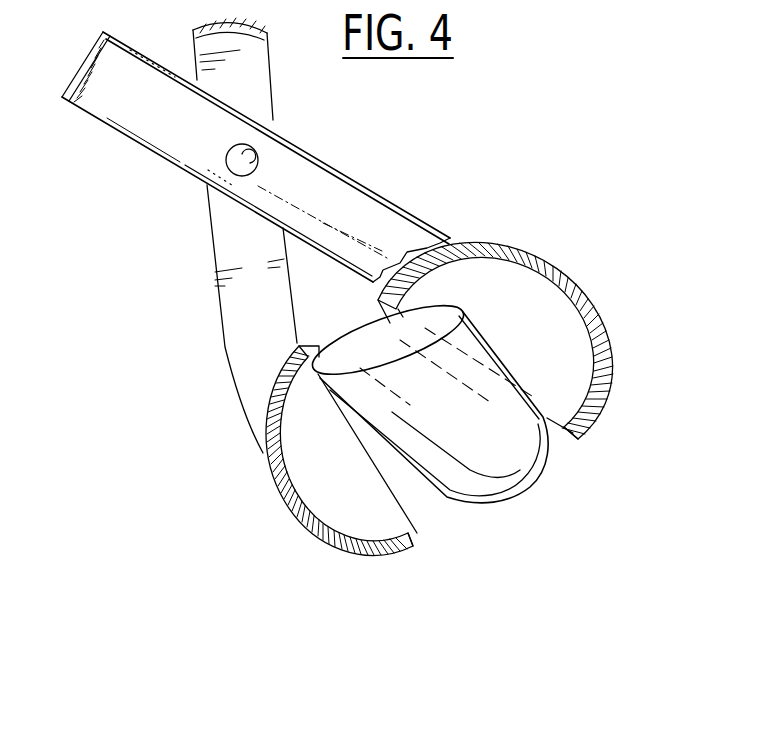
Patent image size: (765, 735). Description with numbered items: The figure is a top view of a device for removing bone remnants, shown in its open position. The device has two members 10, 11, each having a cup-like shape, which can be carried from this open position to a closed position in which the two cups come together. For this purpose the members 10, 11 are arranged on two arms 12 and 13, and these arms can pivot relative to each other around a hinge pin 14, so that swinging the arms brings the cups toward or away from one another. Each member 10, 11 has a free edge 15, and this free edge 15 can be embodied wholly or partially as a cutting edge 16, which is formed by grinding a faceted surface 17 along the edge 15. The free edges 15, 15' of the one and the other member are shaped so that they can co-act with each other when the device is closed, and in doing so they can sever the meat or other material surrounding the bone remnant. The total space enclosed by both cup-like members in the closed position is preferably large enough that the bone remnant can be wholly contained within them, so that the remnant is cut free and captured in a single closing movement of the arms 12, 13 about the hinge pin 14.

The member 10 is at (537, 256).
The member 11 is at (268, 470).
The arm 12 is at (357, 228).
The arm 13 is at (227, 247).
The hinge pin 14 is at (257, 162).
The free edge 15 is at (426, 427).
The free edge 15' is at (573, 455).
The cutting edge 16 is at (397, 500).
The faceted surface 17 is at (577, 437).